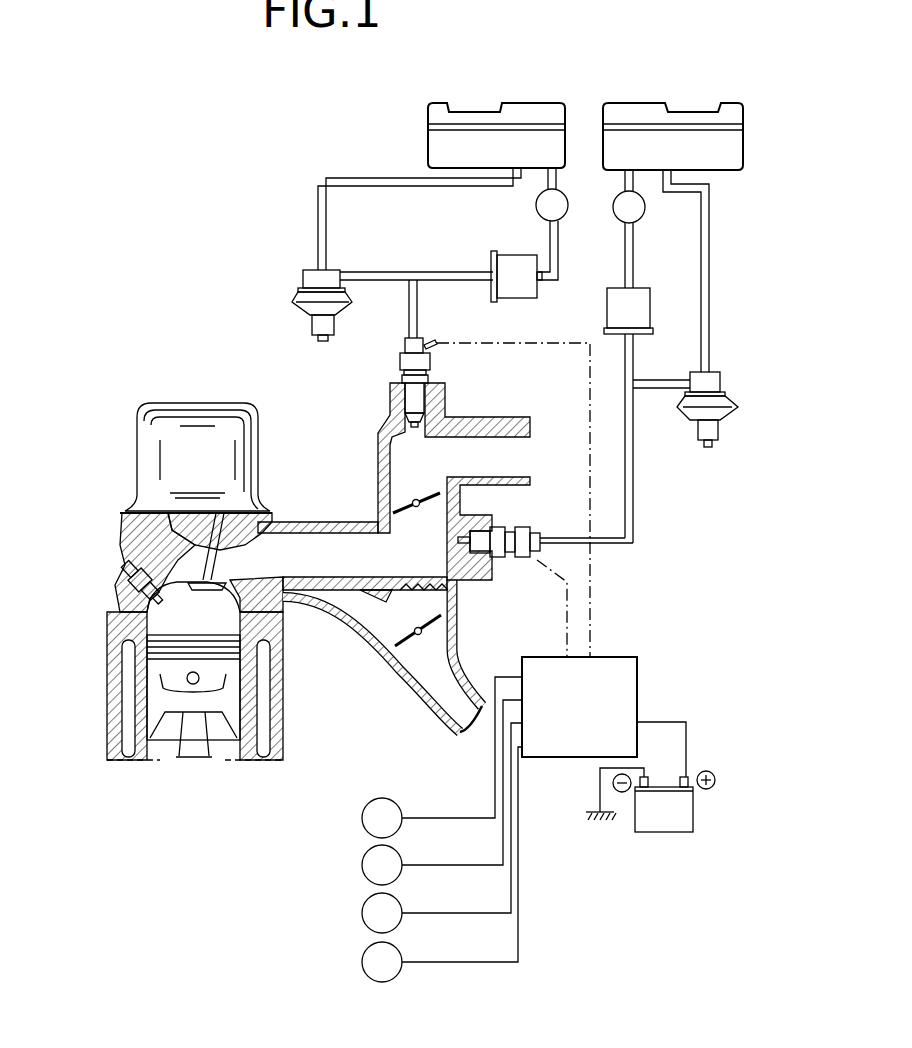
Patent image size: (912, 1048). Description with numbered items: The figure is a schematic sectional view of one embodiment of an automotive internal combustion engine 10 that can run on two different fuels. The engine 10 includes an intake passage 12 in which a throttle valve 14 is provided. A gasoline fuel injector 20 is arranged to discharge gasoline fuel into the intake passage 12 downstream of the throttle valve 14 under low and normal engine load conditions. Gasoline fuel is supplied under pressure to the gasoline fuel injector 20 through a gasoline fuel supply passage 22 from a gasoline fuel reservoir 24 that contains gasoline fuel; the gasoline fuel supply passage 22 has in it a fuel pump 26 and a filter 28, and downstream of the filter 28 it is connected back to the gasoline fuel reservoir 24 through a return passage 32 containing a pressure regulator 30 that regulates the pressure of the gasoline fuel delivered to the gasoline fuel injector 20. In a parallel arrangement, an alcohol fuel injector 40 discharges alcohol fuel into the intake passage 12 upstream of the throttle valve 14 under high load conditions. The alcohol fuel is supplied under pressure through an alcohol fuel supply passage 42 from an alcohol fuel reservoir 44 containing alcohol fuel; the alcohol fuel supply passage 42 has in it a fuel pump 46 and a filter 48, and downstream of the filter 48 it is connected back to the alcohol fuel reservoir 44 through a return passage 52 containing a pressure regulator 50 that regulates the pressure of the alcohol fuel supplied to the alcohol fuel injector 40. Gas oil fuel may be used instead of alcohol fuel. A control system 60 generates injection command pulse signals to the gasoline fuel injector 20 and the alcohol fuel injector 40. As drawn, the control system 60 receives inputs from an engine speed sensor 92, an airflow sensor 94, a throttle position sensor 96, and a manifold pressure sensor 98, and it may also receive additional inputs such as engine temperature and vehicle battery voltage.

The engine 10 is at (300, 676).
The intake passage 12 is at (307, 550).
The throttle valve 14 is at (378, 470).
The gasoline fuel injector 20 is at (478, 535).
The gasoline fuel supply passage 22 is at (636, 488).
The gasoline fuel reservoir 24 is at (690, 112).
The fuel pump 26 is at (644, 214).
The filter 28 is at (652, 322).
The pressure regulator 30 is at (722, 378).
The return passage 32 is at (710, 259).
The alcohol fuel injector 40 is at (408, 397).
The alcohol fuel supply passage 42 is at (418, 305).
The alcohol fuel reservoir 44 is at (481, 112).
The fuel pump 46 is at (536, 208).
The filter 48 is at (517, 300).
The pressure regulator 50 is at (300, 284).
The return passage 52 is at (353, 180).
The control system 60 is at (640, 676).
The engine speed sensor 92 is at (362, 818).
The airflow sensor 94 is at (362, 865).
The throttle position sensor 96 is at (362, 913).
The manifold pressure sensor 98 is at (362, 962).